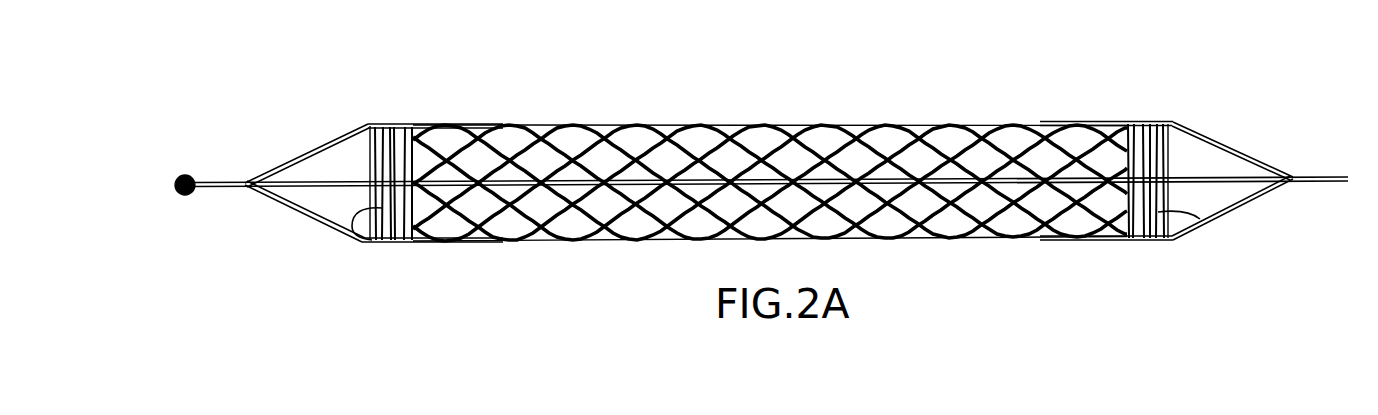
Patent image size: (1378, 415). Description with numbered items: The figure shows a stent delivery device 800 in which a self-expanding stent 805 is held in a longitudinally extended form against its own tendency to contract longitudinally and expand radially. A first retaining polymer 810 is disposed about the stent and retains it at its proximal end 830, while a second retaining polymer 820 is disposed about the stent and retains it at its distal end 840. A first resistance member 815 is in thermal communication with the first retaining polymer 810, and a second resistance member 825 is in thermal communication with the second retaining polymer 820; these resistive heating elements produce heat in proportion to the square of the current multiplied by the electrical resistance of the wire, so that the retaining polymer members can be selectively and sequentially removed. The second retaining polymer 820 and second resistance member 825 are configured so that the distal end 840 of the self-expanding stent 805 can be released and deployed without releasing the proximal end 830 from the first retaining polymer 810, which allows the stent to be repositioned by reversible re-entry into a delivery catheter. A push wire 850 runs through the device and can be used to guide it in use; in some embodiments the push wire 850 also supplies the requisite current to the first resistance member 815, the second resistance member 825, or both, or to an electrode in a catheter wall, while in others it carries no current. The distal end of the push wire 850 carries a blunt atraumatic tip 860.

The device 800 is at (603, 81).
The self-expanding stent 805 is at (930, 127).
The first retaining polymer 810 is at (1213, 141).
The first resistance member 815 is at (1200, 219).
The second retaining polymer 820 is at (313, 151).
The second resistance member 825 is at (352, 231).
The proximal end 830 is at (1175, 252).
The distal end 840 is at (503, 252).
The push wire 850 is at (227, 181).
The blunt atraumatic tip 860 is at (181, 195).